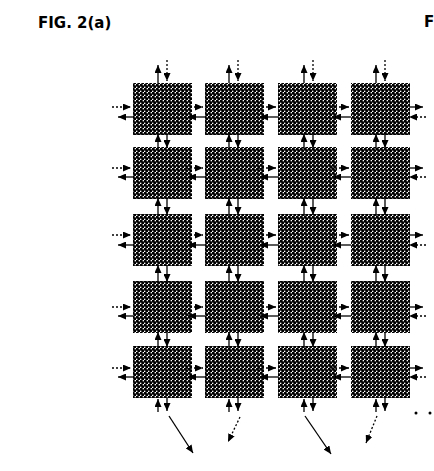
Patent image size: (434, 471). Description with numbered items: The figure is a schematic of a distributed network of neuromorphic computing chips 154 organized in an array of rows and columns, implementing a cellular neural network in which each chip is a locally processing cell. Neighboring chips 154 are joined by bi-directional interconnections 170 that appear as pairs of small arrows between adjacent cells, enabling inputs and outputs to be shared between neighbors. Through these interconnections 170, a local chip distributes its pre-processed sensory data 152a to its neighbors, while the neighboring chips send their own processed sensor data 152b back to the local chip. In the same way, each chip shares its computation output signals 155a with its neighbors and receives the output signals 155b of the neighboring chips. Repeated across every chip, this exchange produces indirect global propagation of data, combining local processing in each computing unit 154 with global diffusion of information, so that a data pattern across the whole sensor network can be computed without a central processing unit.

The neuromorphic computing chip 154 is at (217, 82).
The bi-directional interconnection 170 is at (380, 60).
The processed sensory input 152a is at (107, 319).
The processed sensor data 152b is at (108, 365).
The output signal 155a is at (210, 441).
The output signal 155b is at (348, 441).